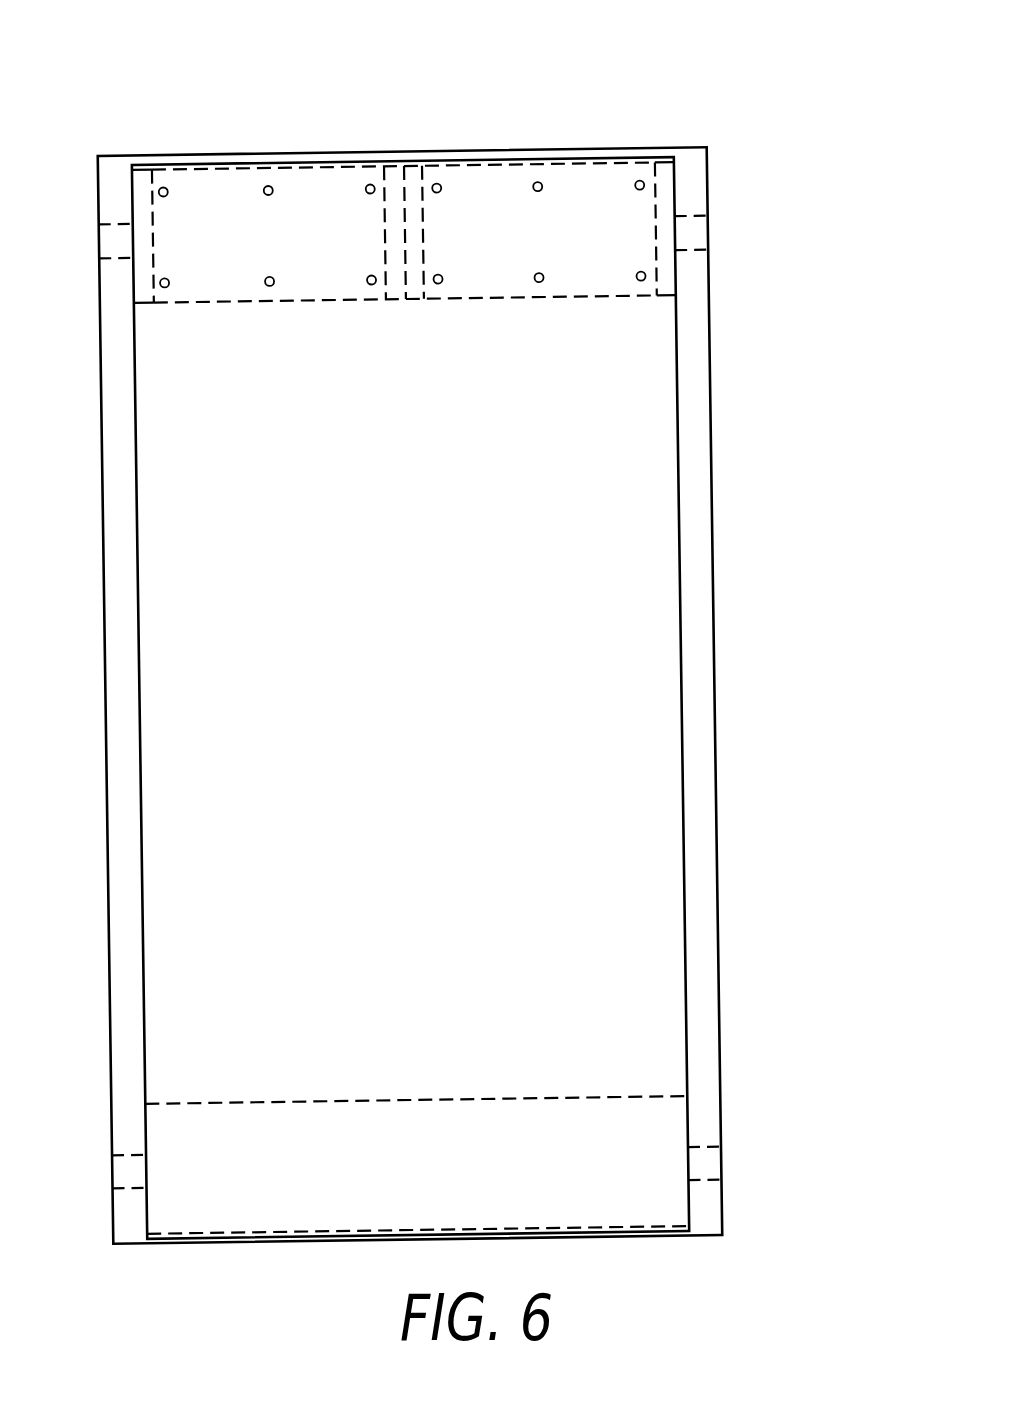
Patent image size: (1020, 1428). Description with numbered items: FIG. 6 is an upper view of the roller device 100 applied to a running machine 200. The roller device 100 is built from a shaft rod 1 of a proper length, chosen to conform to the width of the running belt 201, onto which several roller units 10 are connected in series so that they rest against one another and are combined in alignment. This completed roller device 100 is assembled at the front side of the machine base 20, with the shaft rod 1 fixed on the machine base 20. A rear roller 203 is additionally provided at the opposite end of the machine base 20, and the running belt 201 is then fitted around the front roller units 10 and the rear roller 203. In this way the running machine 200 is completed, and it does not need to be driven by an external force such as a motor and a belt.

The shaft rod 1 is at (116, 230).
The roller unit 10 is at (301, 205).
The roller device 100 is at (482, 315).
The machine base 20 is at (717, 569).
The running machine 200 is at (730, 723).
The running belt 201 is at (637, 908).
The rear roller 203 is at (640, 1128).